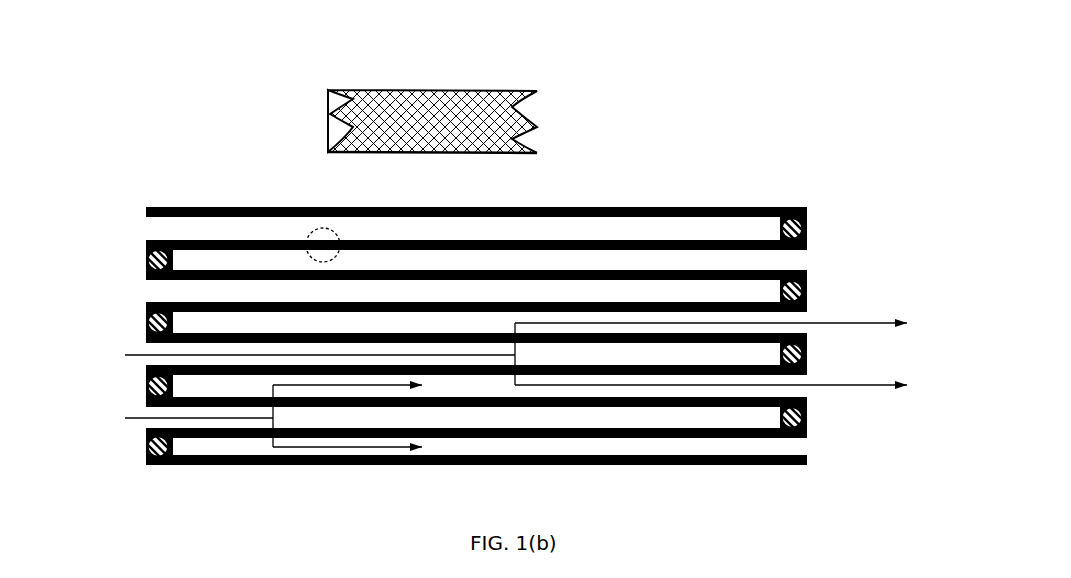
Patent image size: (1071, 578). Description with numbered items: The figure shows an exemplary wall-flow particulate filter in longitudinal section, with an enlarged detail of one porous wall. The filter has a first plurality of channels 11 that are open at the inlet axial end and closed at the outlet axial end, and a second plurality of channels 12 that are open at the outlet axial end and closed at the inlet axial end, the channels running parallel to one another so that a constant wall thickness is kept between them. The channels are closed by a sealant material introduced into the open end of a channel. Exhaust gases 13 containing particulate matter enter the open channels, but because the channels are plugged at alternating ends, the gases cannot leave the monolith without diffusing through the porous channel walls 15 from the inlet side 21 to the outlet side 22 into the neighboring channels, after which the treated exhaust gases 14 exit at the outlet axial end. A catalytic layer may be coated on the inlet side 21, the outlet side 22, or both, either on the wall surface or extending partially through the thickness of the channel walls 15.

The first plurality of channels 11 is at (170, 228).
The second plurality of channels 12 is at (795, 262).
The exhaust gases 13 is at (303, 385).
The treated exhaust gases 14 is at (731, 354).
The channel walls 15 is at (313, 233).
The inlet side 21 is at (407, 90).
The outlet side 22 is at (442, 153).